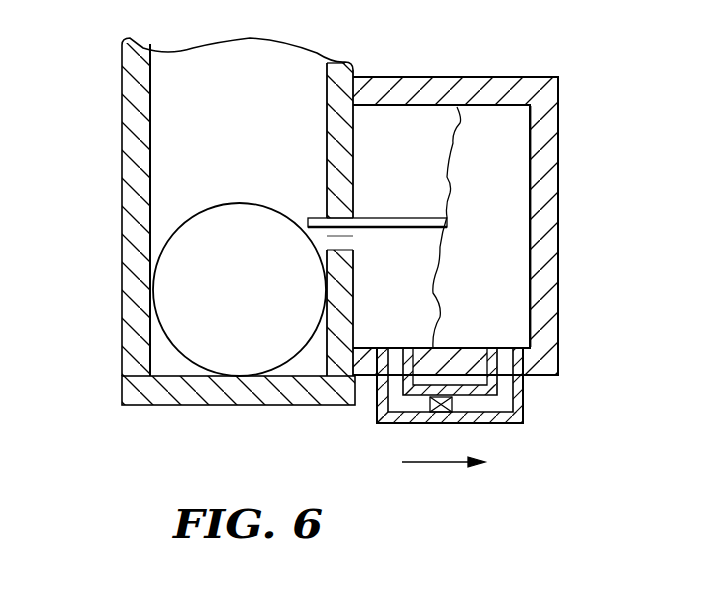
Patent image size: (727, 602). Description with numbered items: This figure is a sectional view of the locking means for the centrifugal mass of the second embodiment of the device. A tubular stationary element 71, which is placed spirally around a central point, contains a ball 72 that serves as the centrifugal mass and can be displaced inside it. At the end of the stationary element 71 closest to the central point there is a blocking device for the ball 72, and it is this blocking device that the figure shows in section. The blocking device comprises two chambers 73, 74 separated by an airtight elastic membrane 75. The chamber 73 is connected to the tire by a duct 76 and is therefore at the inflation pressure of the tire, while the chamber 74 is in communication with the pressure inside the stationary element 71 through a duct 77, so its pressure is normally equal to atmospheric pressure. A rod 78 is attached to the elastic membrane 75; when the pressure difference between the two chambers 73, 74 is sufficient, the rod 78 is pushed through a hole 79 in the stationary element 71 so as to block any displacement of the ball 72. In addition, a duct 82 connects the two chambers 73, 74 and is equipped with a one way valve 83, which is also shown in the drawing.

The tubular stationary element 71 is at (130, 140).
The ball 72 is at (177, 280).
The chamber 73 is at (518, 178).
The chamber 74 is at (435, 203).
The airtight elastic membrane 75 is at (440, 313).
The duct 76 is at (547, 232).
The duct 77 is at (357, 252).
The rod 78 is at (398, 220).
The hole 79 is at (340, 207).
The duct 82 is at (503, 400).
The one way valve 83 is at (455, 405).